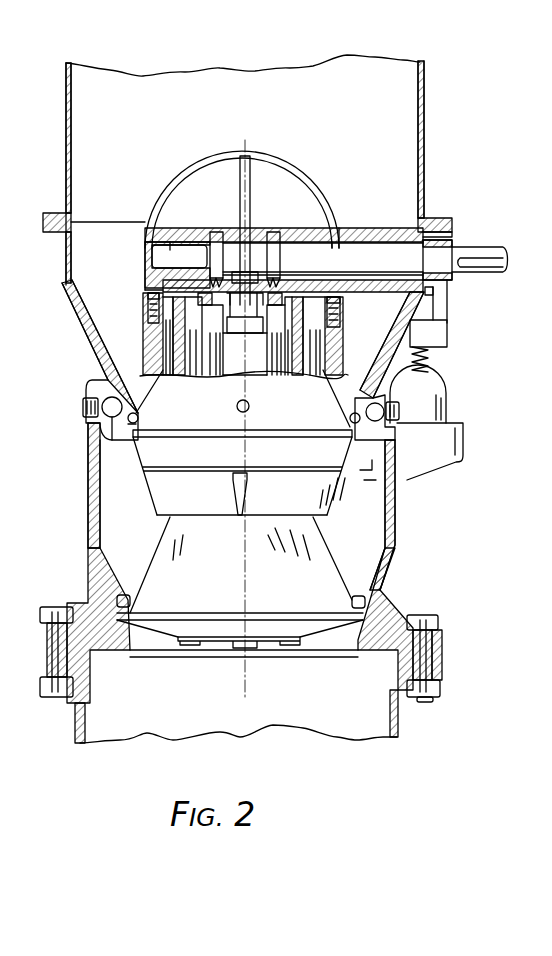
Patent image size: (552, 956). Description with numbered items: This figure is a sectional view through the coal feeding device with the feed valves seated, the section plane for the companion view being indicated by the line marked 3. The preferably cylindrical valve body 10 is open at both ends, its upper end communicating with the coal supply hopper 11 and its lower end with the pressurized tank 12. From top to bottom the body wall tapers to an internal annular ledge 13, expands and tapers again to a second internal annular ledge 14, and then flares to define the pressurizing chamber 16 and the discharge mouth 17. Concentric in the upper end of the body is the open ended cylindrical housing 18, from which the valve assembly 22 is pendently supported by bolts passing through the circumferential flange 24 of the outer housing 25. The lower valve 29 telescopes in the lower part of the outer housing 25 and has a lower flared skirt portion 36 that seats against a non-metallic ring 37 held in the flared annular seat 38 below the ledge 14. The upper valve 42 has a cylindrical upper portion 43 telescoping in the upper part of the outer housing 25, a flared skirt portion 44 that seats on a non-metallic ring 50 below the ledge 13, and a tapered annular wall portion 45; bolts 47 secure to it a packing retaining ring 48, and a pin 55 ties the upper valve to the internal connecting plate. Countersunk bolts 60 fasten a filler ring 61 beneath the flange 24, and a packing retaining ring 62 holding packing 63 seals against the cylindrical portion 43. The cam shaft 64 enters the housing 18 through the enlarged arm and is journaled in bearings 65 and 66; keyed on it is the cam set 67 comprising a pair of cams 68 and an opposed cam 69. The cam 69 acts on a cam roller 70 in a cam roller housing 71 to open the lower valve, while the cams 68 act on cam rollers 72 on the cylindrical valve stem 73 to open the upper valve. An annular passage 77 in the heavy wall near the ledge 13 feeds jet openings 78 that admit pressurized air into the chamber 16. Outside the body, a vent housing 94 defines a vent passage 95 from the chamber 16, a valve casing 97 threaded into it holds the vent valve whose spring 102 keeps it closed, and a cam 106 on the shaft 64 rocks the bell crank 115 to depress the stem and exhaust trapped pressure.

The section line 3- 3 is at (265, 125).
The valve body 10 is at (64, 275).
The coal supply hopper 11 is at (423, 146).
The pressurized tank 12 is at (400, 726).
The internal annular ledge 13 is at (140, 415).
The second internal annular ledge 14 is at (128, 594).
The pressurizing chamber 16 is at (316, 544).
The discharge mouth 17 is at (244, 631).
The cylindrical housing 18 is at (147, 268).
The valve assembly 22 is at (323, 425).
The circumferential flange 24 is at (344, 310).
The outer housing 25 is at (306, 362).
The lower valve 29 is at (163, 568).
The lower flared skirt portion 36 is at (328, 584).
The non-metallic ring 37 is at (367, 613).
The flared annular seat 38 is at (118, 620).
The upper valve 42 is at (139, 457).
The cylindrical upper portion 43 is at (322, 340).
The flared skirt portion 44 is at (155, 387).
The annular wall portion 45 is at (332, 487).
The bolts 47 is at (250, 480).
The packing retaining ring 48 is at (148, 498).
The non-metallic ring 50 is at (136, 423).
The pin 55 is at (251, 408).
The countersunk bolts 60 is at (152, 302).
The filler ring 61 is at (145, 317).
The packing retaining ring 62 is at (146, 337).
The packing 63 is at (305, 355).
The cam shaft 64 is at (398, 255).
The bearing 65 is at (168, 242).
The bearing 66 is at (362, 235).
The cam set 67 is at (262, 240).
The cams 68 is at (214, 232).
The cam 69 is at (242, 230).
The cam roller 70 is at (270, 290).
The cam roller housing 71 is at (262, 306).
The cam rollers 72 is at (213, 286).
The cylindrical valve stem 73 is at (348, 298).
The annular passage 77 is at (110, 407).
The jet openings 78 is at (85, 420).
The vent housing 94 is at (463, 470).
The vent passage 95 is at (380, 483).
The valve casing 97 is at (447, 403).
The spring 102 is at (428, 360).
The cam 106 is at (430, 293).
The bell crank 115 is at (447, 343).